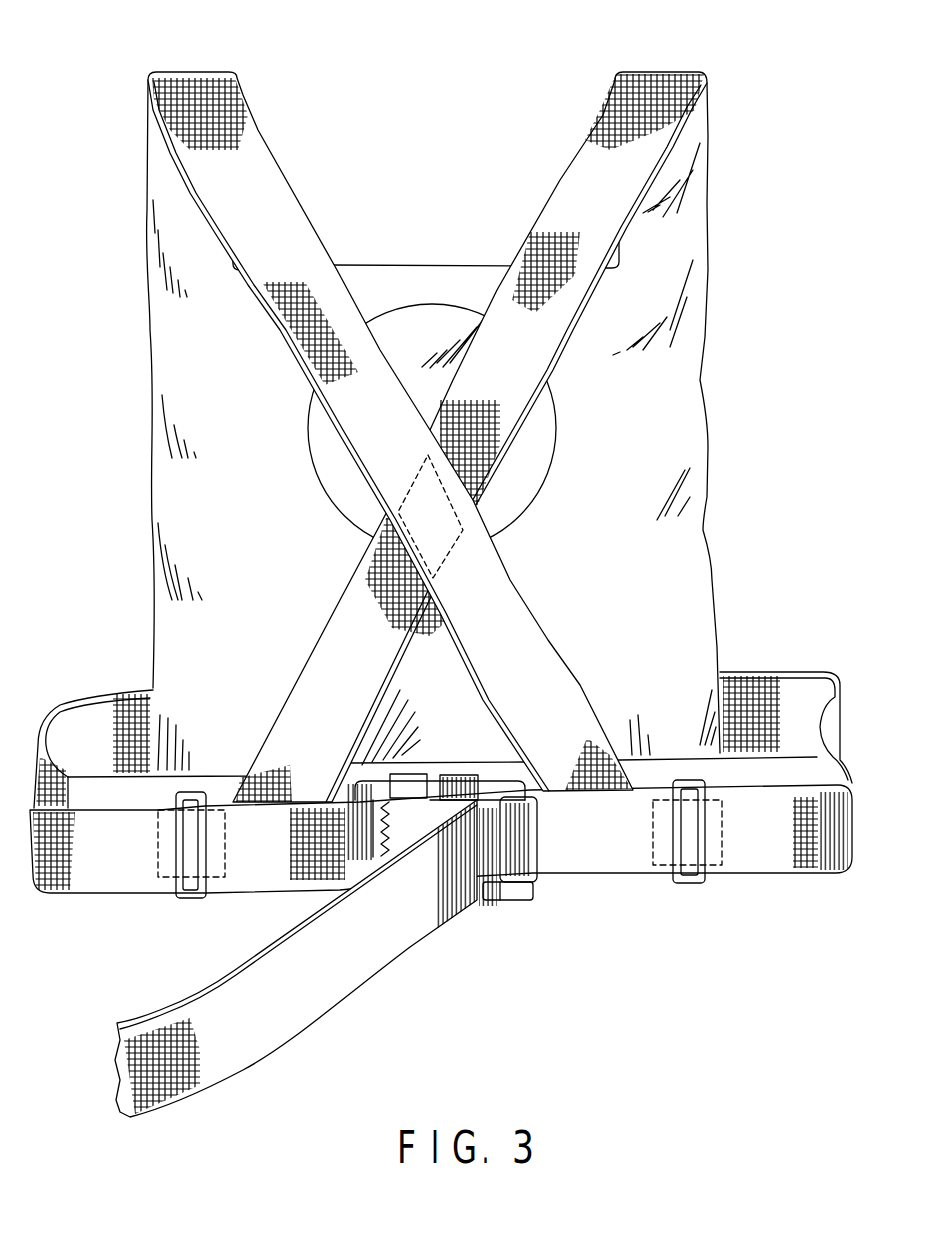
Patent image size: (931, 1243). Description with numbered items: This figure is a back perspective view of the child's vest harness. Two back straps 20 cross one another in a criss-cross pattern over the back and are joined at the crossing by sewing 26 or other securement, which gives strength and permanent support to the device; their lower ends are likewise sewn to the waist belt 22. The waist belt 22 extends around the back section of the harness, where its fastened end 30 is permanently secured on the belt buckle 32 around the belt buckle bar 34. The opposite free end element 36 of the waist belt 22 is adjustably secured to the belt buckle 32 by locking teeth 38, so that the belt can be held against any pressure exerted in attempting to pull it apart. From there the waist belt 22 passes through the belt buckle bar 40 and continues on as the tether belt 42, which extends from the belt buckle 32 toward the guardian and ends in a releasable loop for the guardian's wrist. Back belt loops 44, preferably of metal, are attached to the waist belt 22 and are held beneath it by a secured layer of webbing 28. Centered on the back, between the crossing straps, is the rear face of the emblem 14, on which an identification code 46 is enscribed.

The emblem 14 is at (412, 332).
The back straps 20 is at (180, 78).
The waist belt 22 is at (142, 858).
The sewing 26 is at (427, 512).
The webbing 28 is at (170, 833).
The fastened end 30 is at (402, 890).
The belt buckle 32 is at (503, 900).
The belt buckle bar 34 is at (487, 815).
The free end element 36 is at (448, 802).
The locking teeth 38 is at (383, 812).
The belt buckle bar 40 is at (462, 815).
The tether belt 42 is at (305, 983).
The back belt loops 44 is at (207, 877).
The identification code 46 is at (452, 383).